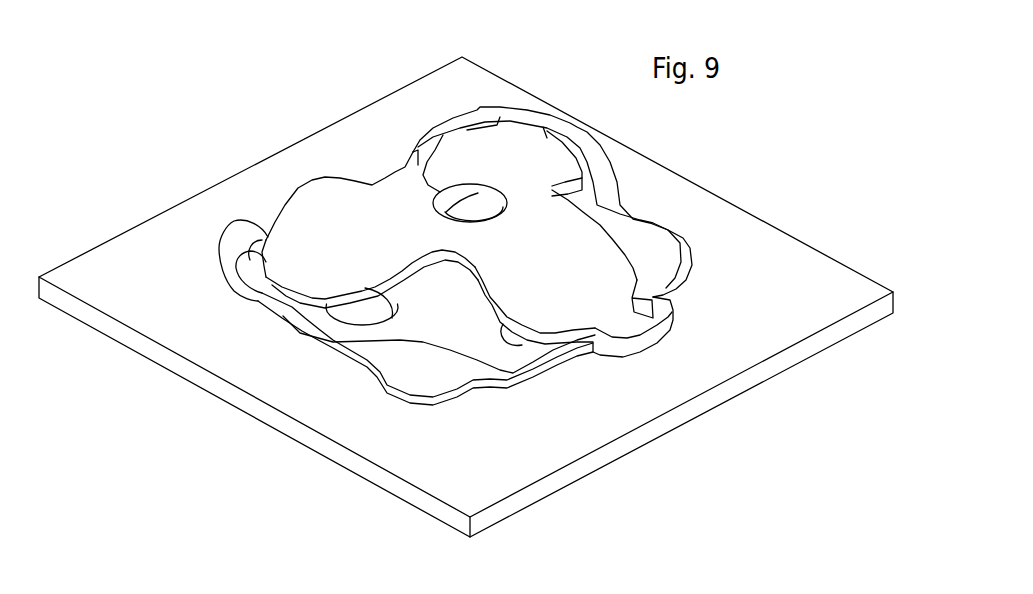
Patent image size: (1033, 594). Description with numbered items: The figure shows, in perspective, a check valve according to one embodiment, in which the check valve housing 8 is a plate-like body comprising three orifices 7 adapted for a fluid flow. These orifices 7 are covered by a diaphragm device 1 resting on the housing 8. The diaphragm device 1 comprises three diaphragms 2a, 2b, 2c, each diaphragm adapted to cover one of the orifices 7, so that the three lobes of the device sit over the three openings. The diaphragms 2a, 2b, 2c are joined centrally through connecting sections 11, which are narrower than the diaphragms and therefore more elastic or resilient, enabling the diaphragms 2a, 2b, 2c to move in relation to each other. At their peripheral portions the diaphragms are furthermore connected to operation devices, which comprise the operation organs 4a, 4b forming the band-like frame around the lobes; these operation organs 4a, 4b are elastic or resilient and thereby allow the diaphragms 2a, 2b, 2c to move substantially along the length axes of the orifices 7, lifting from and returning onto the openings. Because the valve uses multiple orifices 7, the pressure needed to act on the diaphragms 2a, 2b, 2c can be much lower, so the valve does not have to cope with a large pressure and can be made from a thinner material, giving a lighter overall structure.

The diaphragm device 1 is at (368, 146).
The diaphragm 2a is at (356, 249).
The diaphragm 2b is at (513, 171).
The diaphragm 2c is at (568, 282).
The operation organ 4a is at (463, 121).
The operation organ 4b is at (523, 127).
The orifice 7 is at (366, 325).
The check valve housing 8 is at (783, 270).
The connecting section 11 is at (438, 192).